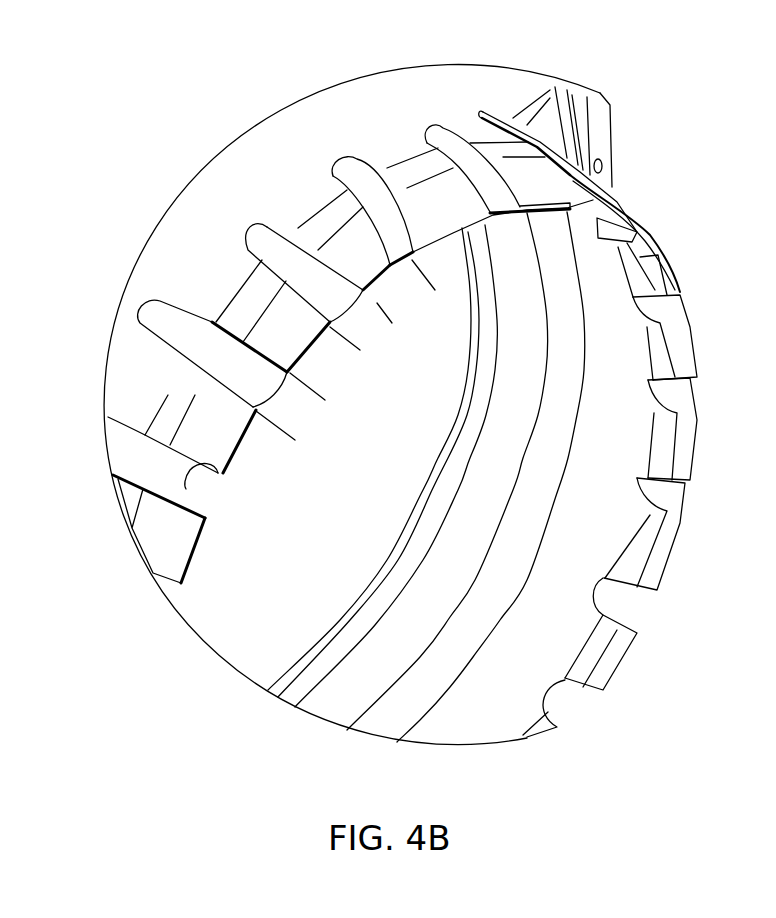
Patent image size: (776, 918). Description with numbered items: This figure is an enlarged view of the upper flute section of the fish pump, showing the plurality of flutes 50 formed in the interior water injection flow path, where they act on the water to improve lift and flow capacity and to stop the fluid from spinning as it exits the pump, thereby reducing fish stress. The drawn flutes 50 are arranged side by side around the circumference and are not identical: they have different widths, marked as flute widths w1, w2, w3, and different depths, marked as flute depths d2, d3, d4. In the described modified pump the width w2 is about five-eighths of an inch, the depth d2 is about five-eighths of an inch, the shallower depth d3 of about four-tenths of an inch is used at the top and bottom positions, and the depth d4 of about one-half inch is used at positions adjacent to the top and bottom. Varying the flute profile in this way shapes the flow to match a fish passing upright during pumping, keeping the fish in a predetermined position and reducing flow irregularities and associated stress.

The flute depth d2 is at (97, 378).
The flute depth d3 is at (247, 230).
The flute depth d4 is at (332, 165).
The flute width w1 is at (411, 277).
The flute width w2 is at (275, 438).
The flute width w3 is at (308, 379).
The flutes 50 is at (697, 500).